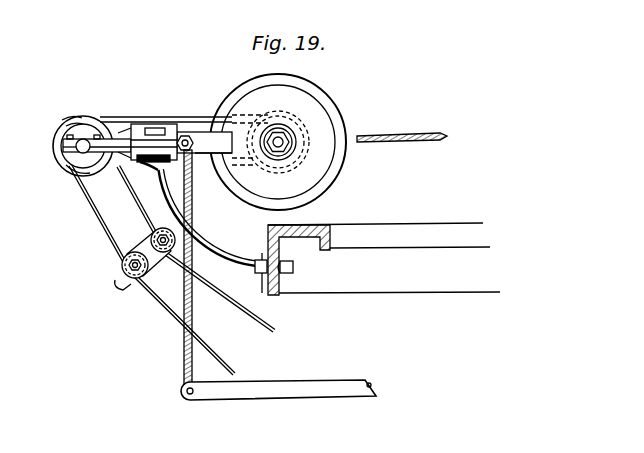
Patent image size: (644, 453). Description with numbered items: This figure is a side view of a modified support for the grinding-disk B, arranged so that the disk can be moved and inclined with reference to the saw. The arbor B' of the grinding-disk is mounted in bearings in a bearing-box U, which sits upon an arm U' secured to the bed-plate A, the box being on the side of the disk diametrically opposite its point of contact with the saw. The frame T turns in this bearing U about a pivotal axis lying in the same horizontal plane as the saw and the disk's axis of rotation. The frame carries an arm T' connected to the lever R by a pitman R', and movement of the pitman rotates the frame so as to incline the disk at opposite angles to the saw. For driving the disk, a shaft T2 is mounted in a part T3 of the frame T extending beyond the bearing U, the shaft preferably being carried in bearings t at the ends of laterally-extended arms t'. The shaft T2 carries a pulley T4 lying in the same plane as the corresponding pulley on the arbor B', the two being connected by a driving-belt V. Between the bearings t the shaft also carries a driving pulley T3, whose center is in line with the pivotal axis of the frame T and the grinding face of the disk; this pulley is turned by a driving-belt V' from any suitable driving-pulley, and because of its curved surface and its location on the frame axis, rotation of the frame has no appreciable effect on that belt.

The bed-plate A is at (381, 259).
The grinding-disk B is at (278, 142).
The arbor of the grinding-disk B' is at (278, 147).
The lever R is at (278, 382).
The pitman R' is at (199, 269).
The frame T is at (83, 146).
The arm of the frame T' is at (158, 123).
The shaft T2 is at (75, 157).
The part of the frame / pulley T3 is at (66, 126).
The pulley T4 is at (84, 119).
The bearings t is at (76, 150).
The laterally-extended arms t' is at (189, 249).
The bearing-box U is at (147, 131).
The arm U' is at (203, 217).
The driving-belt V is at (166, 147).
The driving-belt V' is at (152, 270).